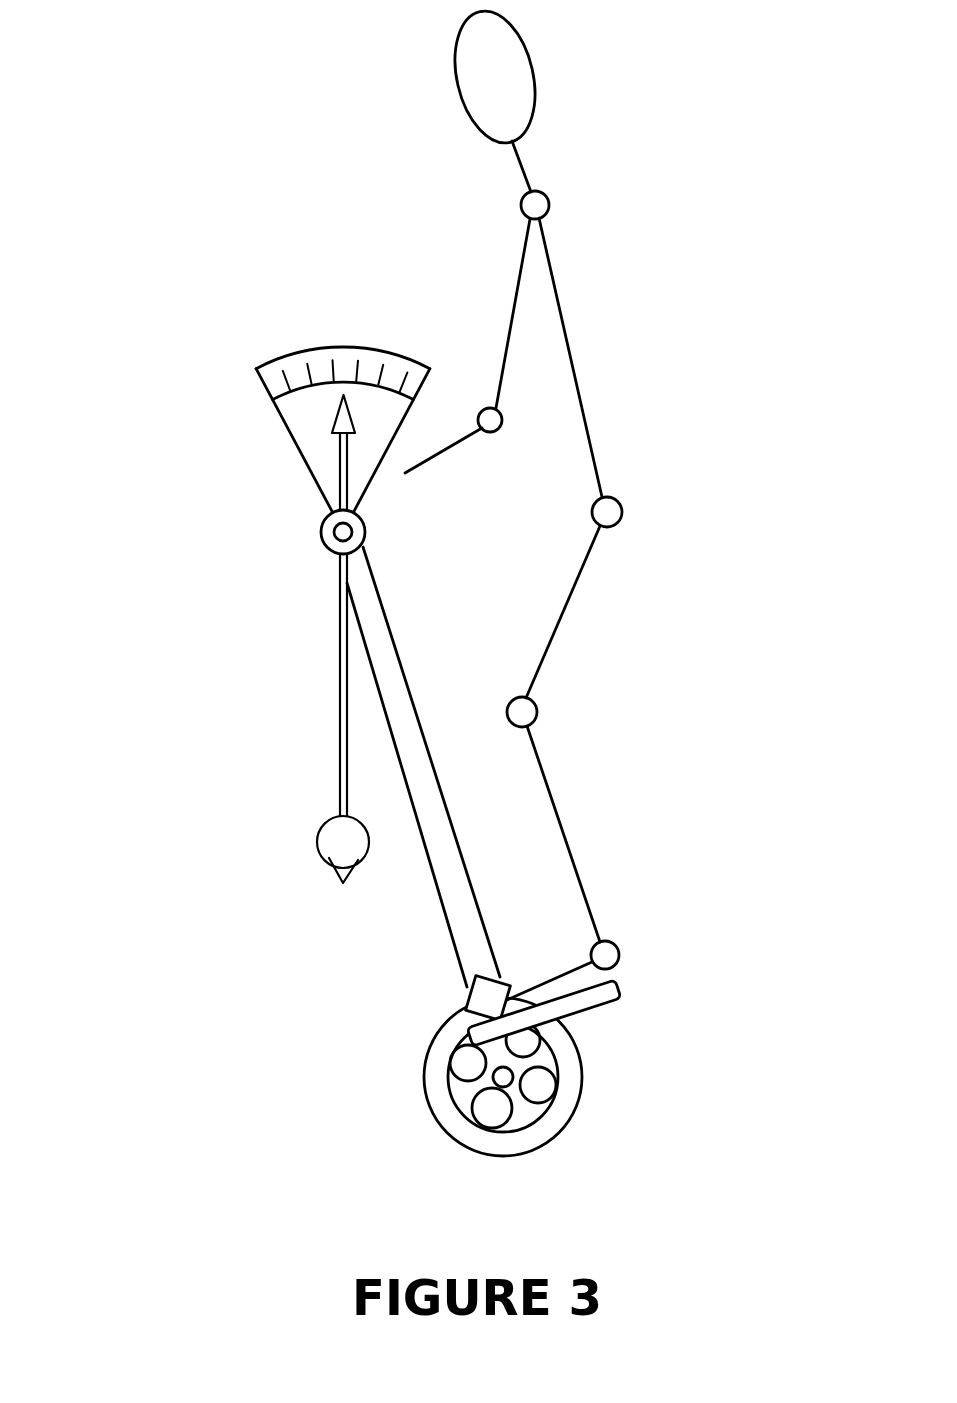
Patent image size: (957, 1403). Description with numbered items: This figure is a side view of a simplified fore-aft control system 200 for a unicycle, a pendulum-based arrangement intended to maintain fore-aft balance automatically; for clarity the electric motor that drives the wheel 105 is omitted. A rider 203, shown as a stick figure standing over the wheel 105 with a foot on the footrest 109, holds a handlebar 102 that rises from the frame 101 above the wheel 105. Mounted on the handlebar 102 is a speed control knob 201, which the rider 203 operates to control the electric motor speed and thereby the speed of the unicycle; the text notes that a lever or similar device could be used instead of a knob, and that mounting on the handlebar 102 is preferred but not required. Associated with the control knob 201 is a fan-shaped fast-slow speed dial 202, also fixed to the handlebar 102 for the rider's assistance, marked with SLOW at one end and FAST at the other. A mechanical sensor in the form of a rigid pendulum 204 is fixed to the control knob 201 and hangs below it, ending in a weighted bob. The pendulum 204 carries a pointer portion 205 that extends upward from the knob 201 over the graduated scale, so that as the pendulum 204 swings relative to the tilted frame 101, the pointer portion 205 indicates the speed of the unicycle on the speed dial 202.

The fore-aft control system 200 is at (192, 242).
The speed dial 202 is at (347, 348).
The pointer portion 205 is at (338, 432).
The rigid pendulum 204 is at (330, 733).
The speed control knob 201 is at (365, 532).
The handlebar 102 is at (342, 532).
The wheel 105 is at (432, 1110).
The frame 101 is at (458, 892).
The footrest 109 is at (600, 1000).
The rider 203 is at (537, 173).